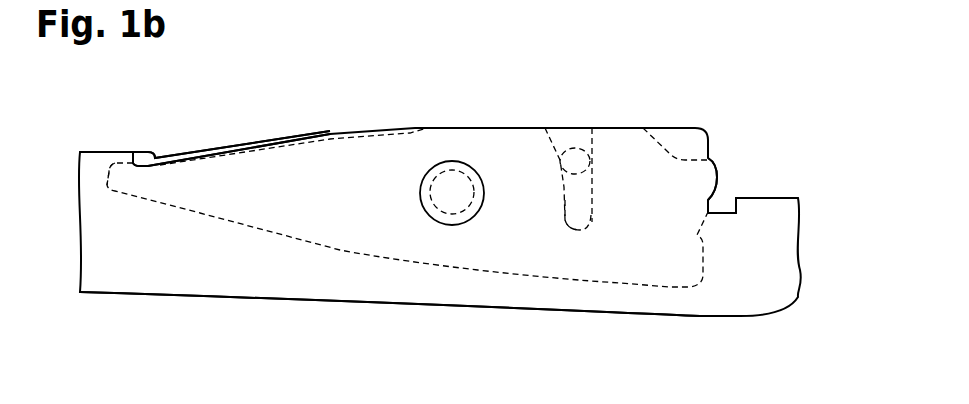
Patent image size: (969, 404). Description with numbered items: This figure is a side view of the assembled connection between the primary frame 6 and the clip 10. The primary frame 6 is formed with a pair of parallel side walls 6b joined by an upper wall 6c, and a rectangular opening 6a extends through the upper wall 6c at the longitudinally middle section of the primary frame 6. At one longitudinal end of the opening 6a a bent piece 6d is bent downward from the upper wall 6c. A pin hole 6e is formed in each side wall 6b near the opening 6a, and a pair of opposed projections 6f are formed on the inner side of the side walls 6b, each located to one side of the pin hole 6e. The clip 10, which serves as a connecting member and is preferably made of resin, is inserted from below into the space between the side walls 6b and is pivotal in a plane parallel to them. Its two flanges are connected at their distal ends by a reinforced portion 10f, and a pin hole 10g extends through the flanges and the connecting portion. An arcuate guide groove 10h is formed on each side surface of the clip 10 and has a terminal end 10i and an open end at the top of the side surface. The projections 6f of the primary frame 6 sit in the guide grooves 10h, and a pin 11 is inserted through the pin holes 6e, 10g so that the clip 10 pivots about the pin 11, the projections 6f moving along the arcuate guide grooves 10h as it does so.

The primary frame 6 is at (771, 196).
The rectangular opening 6a is at (244, 147).
The side walls 6b is at (311, 296).
The upper wall 6c is at (112, 150).
The bent piece 6d is at (148, 150).
The pin hole 6e is at (466, 226).
The projections 6f is at (592, 165).
The clip 10 is at (668, 145).
The reinforced portion 10f is at (107, 186).
The pin hole 10g is at (509, 217).
The arcuate guide groove 10h is at (562, 176).
The terminal end 10i is at (592, 212).
The pin 11 is at (436, 189).